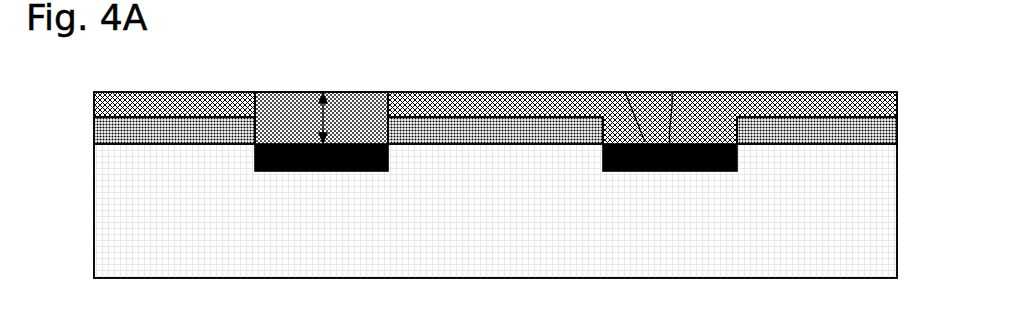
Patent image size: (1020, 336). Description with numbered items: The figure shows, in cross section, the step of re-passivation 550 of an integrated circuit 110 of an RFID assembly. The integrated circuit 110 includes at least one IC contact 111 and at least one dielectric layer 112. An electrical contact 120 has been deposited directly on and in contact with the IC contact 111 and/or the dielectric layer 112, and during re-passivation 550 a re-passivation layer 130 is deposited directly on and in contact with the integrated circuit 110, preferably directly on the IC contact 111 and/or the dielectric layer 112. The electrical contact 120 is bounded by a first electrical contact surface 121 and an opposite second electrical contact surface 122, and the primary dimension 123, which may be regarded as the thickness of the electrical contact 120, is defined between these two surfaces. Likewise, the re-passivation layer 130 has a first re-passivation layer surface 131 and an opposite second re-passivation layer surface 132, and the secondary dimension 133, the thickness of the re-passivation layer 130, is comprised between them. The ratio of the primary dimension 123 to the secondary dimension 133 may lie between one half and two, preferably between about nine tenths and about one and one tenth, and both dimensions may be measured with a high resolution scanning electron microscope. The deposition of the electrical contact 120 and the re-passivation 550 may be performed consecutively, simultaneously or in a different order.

The integrated circuit 110 is at (713, 263).
The IC contact 111 is at (365, 172).
The dielectric layer 112 is at (580, 145).
The electrical contact 120 is at (264, 97).
The first electrical contact surface 121 is at (284, 143).
The second electrical contact surface 122 is at (302, 88).
The primary dimension 123 is at (324, 117).
The re-passivation layer 130 is at (528, 100).
The first re-passivation layer surface 131 is at (625, 92).
The second re-passivation layer surface 132 is at (577, 92).
The secondary dimension 133 is at (672, 117).
The re-passivation 550 is at (137, 77).